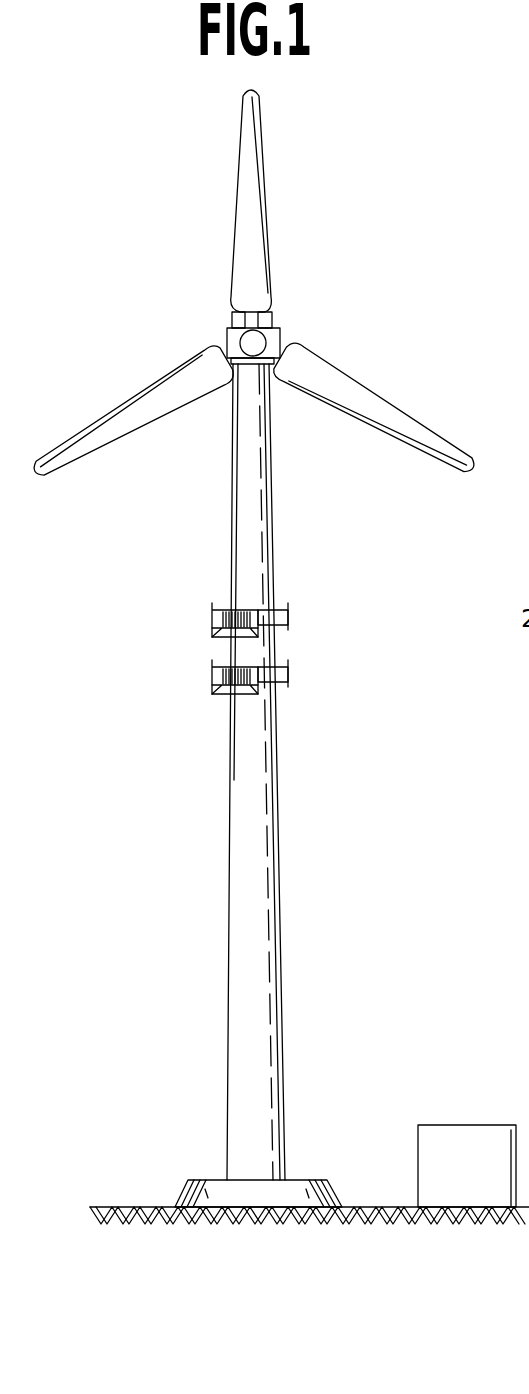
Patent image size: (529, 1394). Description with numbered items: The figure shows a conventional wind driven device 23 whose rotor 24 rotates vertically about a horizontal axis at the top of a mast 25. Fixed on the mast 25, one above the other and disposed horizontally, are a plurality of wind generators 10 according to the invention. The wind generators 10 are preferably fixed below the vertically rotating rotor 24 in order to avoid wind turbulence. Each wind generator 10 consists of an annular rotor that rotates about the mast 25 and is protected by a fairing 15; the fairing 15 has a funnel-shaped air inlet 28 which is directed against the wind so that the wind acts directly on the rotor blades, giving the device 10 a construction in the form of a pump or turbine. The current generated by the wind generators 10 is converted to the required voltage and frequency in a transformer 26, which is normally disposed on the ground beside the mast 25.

The wind generator 10 is at (310, 646).
The fairing 15 is at (287, 609).
The wind driven device 23 is at (280, 337).
The rotor 24 is at (253, 245).
The mast 25 is at (252, 540).
The transformer 26 is at (437, 1138).
The air inlet 28 is at (222, 618).